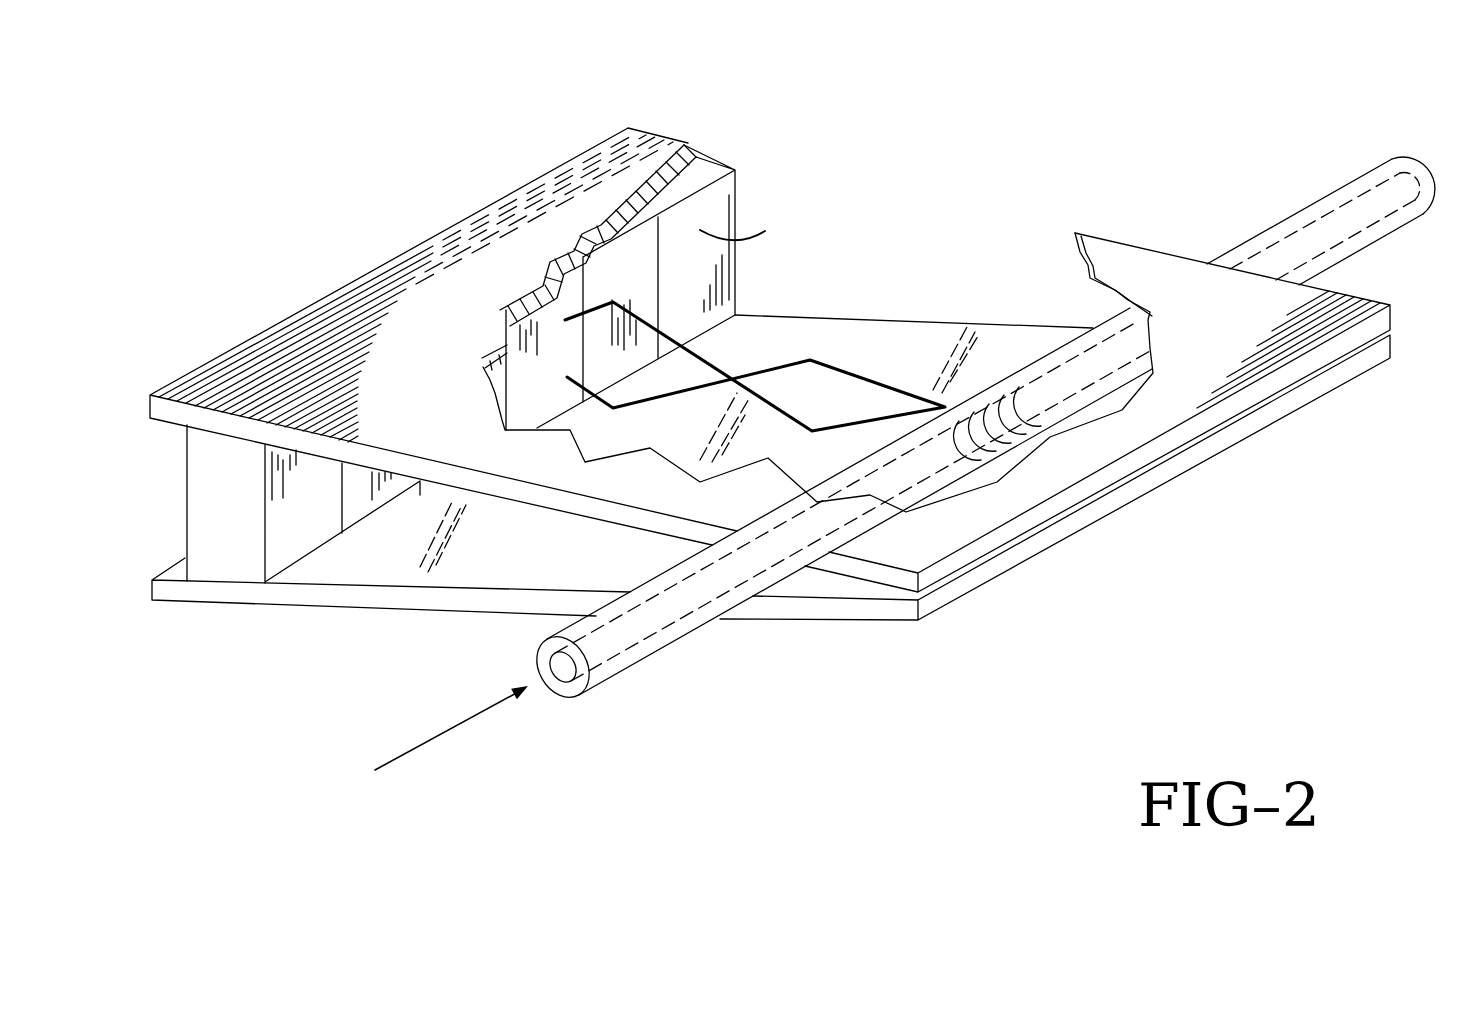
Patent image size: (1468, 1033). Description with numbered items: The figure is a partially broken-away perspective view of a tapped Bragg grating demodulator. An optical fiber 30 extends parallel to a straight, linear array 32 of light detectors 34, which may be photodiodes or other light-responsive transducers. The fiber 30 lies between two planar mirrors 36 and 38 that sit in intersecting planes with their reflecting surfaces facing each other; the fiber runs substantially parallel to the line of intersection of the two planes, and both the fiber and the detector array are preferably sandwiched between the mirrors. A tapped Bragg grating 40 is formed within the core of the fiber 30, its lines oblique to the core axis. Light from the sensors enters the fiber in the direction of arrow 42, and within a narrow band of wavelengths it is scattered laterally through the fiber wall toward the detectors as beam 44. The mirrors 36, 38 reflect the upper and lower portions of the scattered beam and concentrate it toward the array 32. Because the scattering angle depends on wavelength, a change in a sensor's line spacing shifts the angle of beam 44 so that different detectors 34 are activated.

The optical fiber 30 is at (645, 656).
The linear array of light detectors 32 is at (730, 154).
The light detectors 34 is at (628, 282).
The planar mirror 36 is at (215, 379).
The planar mirror 38 is at (382, 576).
The tapped Bragg grating (TBG) 40 is at (985, 410).
The arrow 42 is at (434, 745).
The beam 44 is at (863, 373).